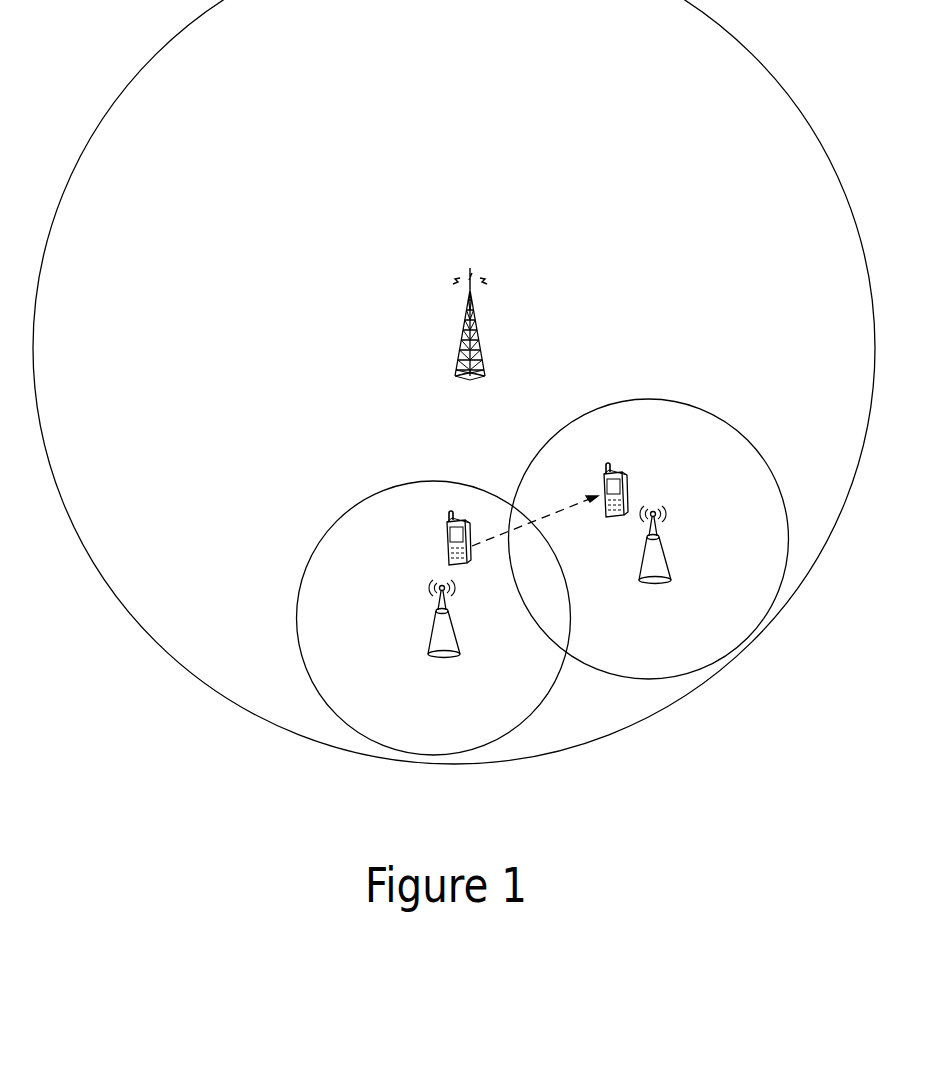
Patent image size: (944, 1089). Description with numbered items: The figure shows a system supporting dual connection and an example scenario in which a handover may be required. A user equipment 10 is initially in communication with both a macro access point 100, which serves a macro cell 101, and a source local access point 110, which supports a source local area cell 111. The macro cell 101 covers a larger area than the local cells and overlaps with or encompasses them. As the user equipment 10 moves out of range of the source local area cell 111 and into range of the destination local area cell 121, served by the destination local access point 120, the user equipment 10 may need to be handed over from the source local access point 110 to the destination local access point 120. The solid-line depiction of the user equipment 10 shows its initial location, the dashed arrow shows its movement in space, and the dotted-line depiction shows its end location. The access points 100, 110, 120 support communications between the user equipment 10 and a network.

The user equipment 10 is at (445, 537).
The macro access point 100 is at (478, 318).
The macro cell 101 is at (454, 382).
The source local access point 110 is at (431, 626).
The source local area cell 111 is at (434, 618).
The destination local access point 120 is at (658, 550).
The destination local area cell 121 is at (649, 539).